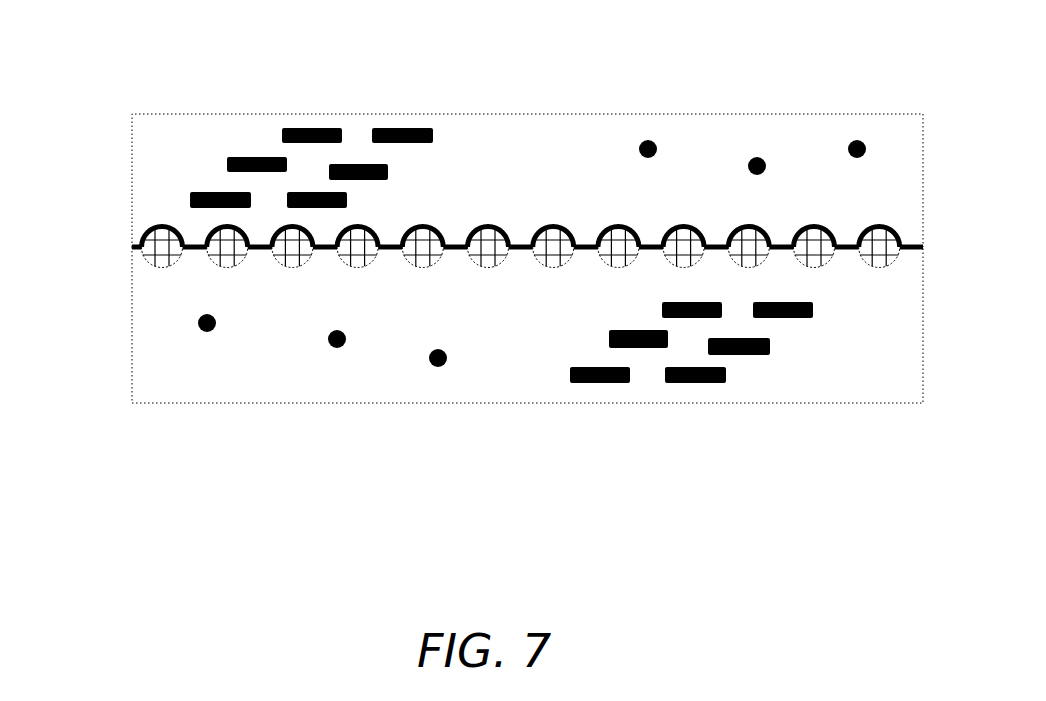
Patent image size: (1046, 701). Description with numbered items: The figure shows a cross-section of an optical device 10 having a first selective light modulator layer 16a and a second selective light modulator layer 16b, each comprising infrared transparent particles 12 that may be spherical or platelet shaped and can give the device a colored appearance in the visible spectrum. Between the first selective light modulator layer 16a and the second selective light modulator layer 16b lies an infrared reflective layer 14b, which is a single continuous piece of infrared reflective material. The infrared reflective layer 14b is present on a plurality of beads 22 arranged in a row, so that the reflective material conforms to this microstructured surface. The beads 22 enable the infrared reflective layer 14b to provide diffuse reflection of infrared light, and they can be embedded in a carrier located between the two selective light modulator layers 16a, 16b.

The optical device 10 is at (95, 117).
The infrared transparent particles 12 is at (446, 366).
The infrared reflective layer 14b is at (483, 261).
The first selective light modulator layer 16a is at (295, 113).
The second selective light modulator layer 16b is at (243, 403).
The beads 22 is at (163, 260).